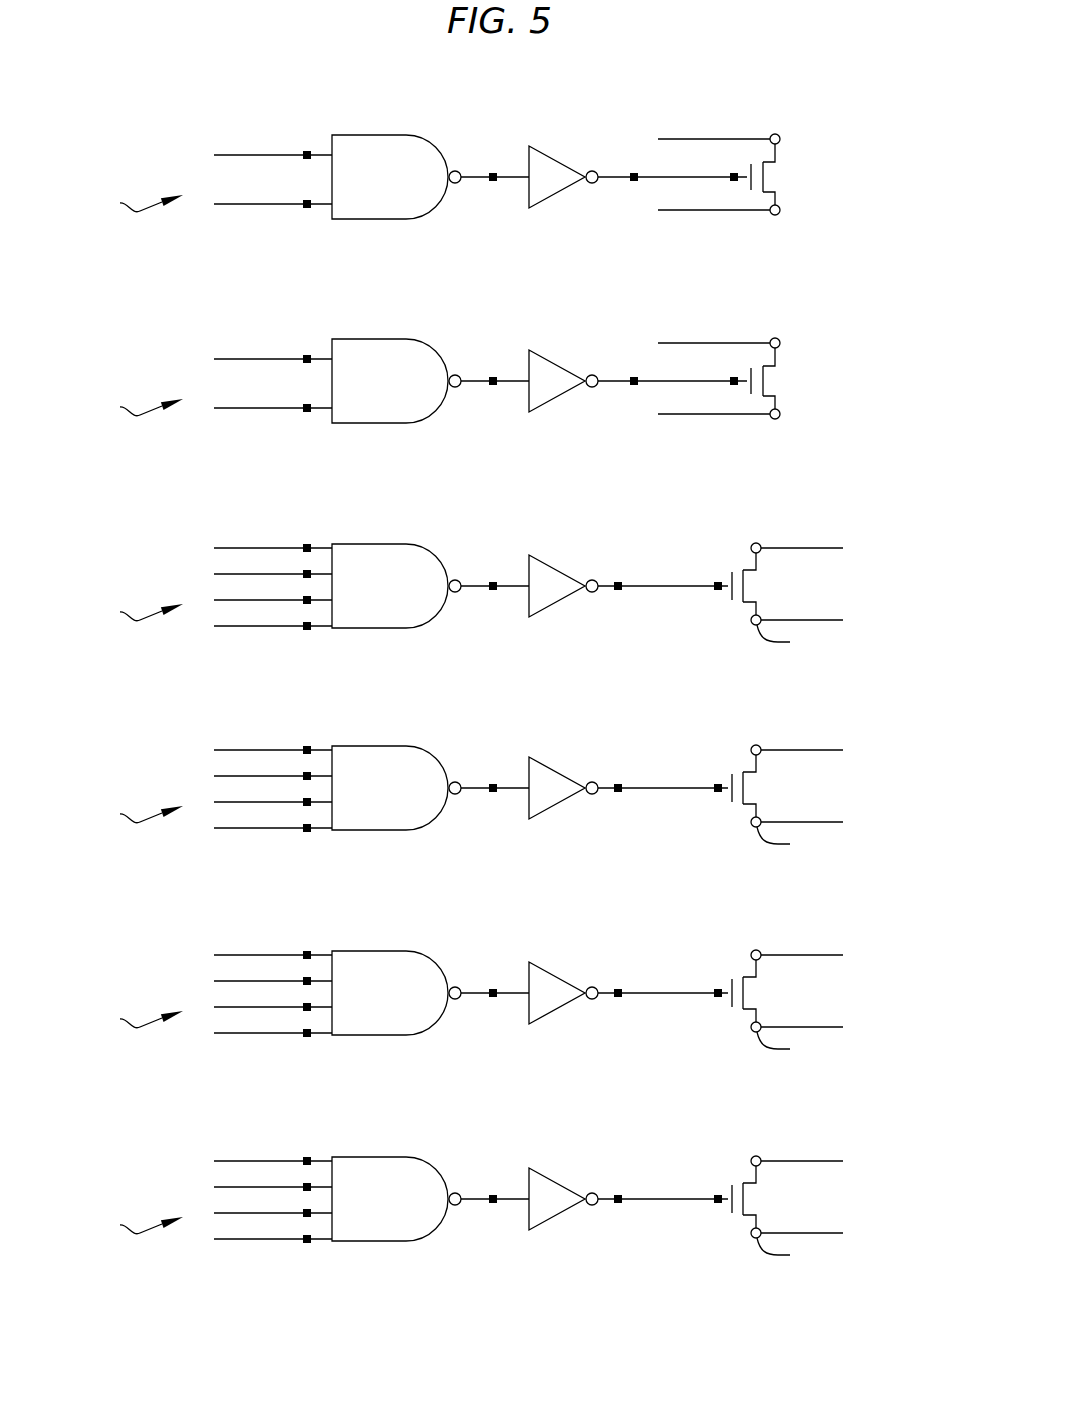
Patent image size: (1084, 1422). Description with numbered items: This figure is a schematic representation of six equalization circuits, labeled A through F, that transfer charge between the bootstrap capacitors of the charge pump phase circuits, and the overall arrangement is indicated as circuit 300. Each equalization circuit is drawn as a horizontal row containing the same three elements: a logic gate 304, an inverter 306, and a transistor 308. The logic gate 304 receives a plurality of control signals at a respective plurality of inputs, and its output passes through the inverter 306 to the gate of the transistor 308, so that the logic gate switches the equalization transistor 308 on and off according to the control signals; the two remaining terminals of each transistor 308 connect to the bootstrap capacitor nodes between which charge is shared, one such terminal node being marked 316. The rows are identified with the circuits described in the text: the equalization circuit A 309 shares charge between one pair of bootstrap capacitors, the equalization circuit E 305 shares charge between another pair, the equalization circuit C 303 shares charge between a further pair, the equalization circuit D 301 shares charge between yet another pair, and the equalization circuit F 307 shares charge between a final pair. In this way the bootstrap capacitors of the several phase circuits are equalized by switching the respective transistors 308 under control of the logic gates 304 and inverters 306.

The equality detection circuit 300 is at (676, 288).
The equalization circuit D 301 is at (230, 912).
The equalization circuit C 303 is at (230, 707).
The logic gate 304 is at (357, 191).
The equalization circuit E 305 is at (230, 505).
The inverter 306 is at (551, 167).
The equalization circuit F 307 is at (230, 1118).
The transistor 308 is at (798, 166).
The equalization circuit A 309 is at (252, 243).
The transistor terminal node 316 is at (749, 746).